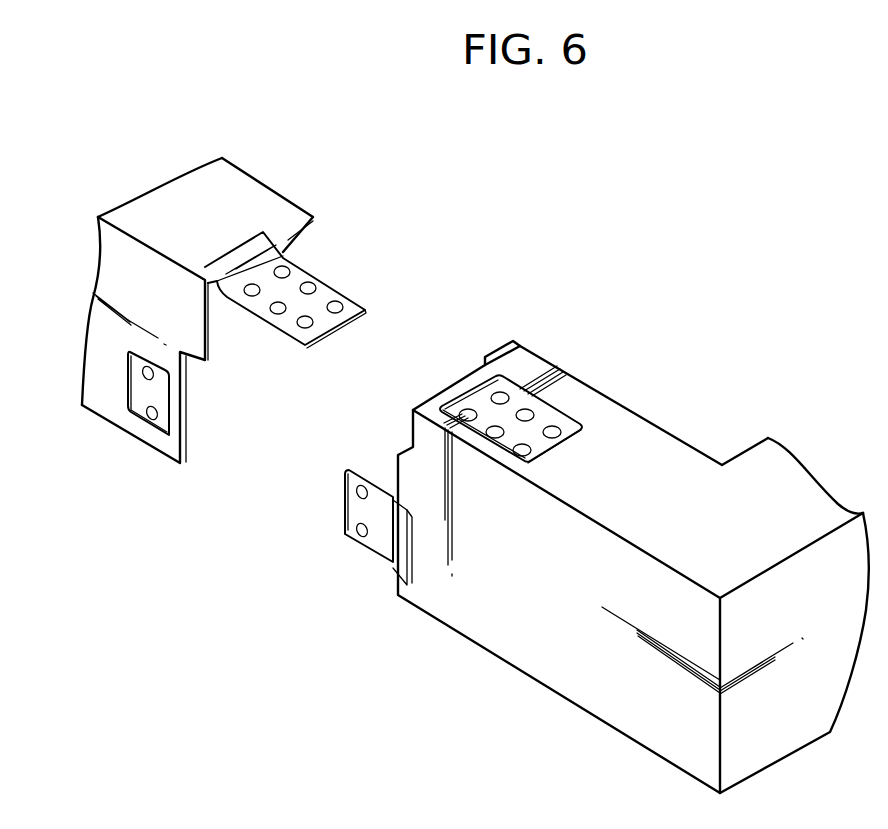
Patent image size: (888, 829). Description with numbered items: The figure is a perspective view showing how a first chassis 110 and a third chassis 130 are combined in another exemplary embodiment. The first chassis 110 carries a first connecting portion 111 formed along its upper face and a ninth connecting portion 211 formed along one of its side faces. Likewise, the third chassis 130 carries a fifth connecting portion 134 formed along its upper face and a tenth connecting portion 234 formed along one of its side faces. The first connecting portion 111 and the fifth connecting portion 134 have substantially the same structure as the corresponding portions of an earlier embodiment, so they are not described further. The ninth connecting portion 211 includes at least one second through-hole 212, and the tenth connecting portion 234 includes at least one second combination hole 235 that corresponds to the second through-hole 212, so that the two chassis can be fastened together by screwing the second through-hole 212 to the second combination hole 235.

The first chassis 110 is at (257, 190).
The first connecting portion 111 is at (303, 272).
The third chassis 130 is at (672, 467).
The fifth connecting portion 134 is at (543, 415).
The ninth connecting portion 211 is at (135, 384).
The second through-hole 212 is at (150, 418).
The tenth connecting portion 234 is at (385, 545).
The second combination hole 235 is at (360, 536).